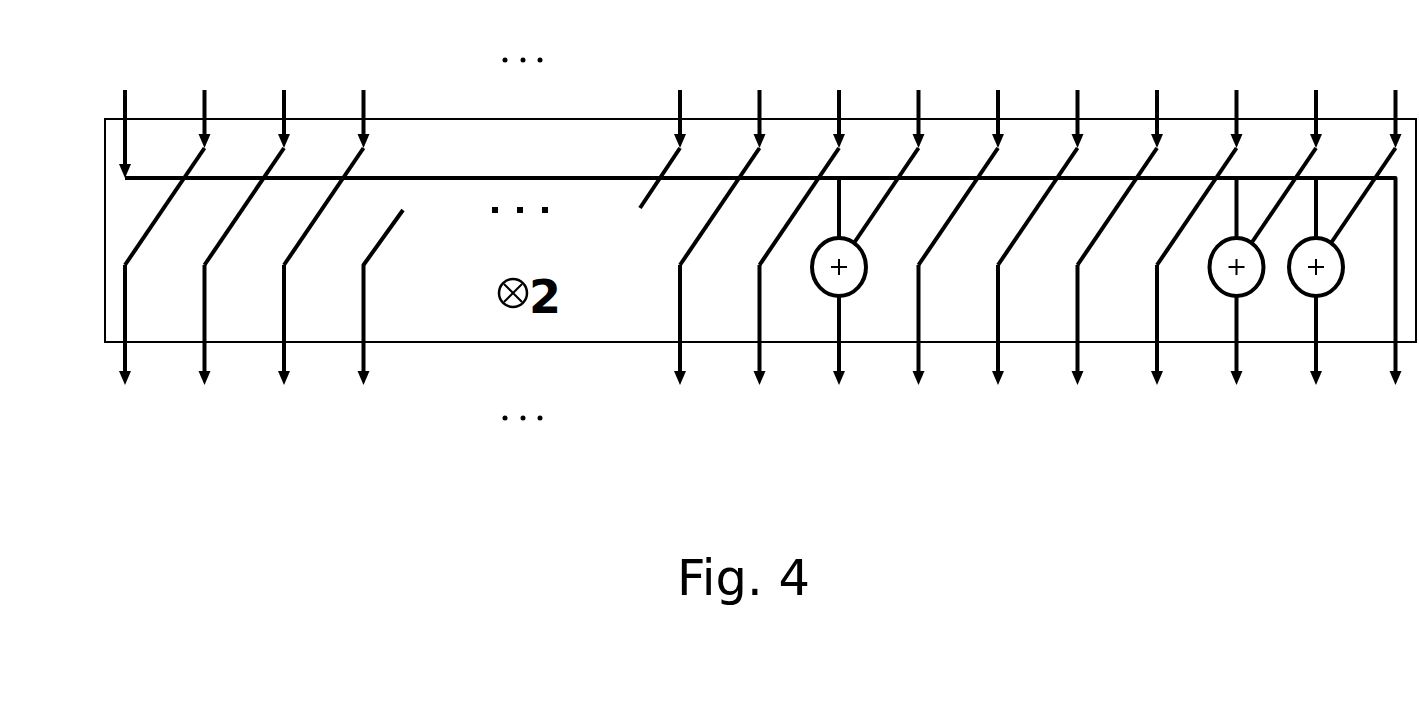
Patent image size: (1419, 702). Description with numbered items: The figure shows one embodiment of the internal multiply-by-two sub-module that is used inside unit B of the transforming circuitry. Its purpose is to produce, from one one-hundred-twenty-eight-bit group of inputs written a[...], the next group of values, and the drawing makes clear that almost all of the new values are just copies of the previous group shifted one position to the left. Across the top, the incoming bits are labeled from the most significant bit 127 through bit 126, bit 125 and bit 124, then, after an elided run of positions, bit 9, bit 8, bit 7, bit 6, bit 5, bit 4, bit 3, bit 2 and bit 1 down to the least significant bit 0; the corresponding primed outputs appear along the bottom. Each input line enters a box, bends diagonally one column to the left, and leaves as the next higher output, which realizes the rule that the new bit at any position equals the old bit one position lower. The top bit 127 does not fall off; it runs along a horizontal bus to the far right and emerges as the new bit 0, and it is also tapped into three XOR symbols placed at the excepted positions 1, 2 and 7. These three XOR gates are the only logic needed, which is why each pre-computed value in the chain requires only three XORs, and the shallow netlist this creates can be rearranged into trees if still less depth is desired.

The most significant bit of the input group 127 is at (126, 410).
The input bit position one hundred twenty-six 126 is at (206, 410).
The input bit position one hundred twenty-five 125 is at (285, 410).
The input bit position one hundred twenty-four 124 is at (364, 410).
The input bit position nine 9 is at (681, 410).
The input bit position eight 8 is at (760, 410).
The input bit position seven 7 is at (840, 410).
The input bit position six 6 is at (920, 410).
The input bit position five 5 is at (999, 410).
The input bit position four 4 is at (1078, 410).
The input bit position three 3 is at (1158, 410).
The input bit position two 2 is at (1238, 410).
The input bit position one 1 is at (1317, 410).
The least significant bit of the input group 0 is at (1396, 410).